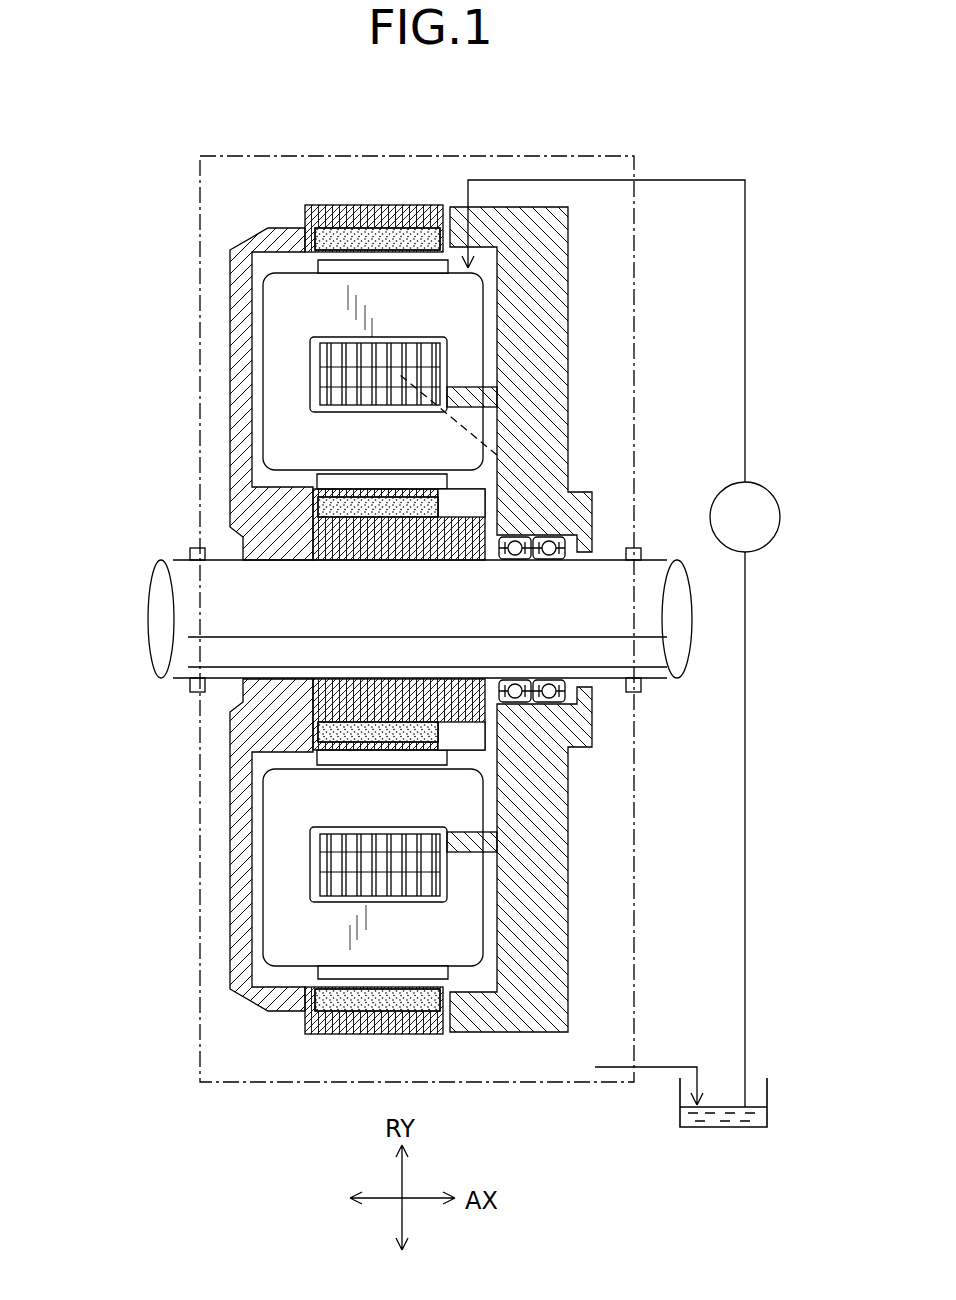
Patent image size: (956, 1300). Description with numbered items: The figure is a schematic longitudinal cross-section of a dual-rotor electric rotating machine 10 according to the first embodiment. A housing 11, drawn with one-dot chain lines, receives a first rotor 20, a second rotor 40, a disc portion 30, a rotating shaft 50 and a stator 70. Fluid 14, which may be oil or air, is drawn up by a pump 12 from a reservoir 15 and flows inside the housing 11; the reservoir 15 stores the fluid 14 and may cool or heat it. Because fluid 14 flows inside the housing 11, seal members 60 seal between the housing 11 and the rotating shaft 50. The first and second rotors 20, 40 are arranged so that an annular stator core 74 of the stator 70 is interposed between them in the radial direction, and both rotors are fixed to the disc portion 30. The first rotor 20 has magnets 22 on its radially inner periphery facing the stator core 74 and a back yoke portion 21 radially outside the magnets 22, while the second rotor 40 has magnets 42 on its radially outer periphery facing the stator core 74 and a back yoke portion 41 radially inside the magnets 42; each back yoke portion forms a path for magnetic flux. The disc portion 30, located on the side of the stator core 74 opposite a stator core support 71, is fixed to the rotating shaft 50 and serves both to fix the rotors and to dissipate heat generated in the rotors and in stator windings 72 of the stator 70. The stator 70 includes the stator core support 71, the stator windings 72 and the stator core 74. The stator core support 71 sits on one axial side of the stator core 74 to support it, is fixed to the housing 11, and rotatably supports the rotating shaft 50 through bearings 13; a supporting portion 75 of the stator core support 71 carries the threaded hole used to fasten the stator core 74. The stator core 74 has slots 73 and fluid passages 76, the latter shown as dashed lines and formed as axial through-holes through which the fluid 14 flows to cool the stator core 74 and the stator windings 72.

The electric rotating machine 10 is at (400, 581).
The housing 11 is at (268, 153).
The pump 12 is at (773, 500).
The bearings 13 is at (568, 748).
The fluid 14 is at (708, 1120).
The reservoir 15 is at (767, 1088).
The first rotor 20 is at (260, 619).
The back yoke portion 21 is at (305, 212).
The magnets 22 is at (313, 250).
The disc portion 30 is at (240, 378).
The second rotor 40 is at (276, 608).
The back yoke portion 41 is at (330, 537).
The magnets 42 is at (300, 491).
The rotating shaft 50 is at (190, 610).
The seal members 60 is at (190, 693).
The stator 70 is at (503, 619).
The stator core support 71 is at (537, 250).
The stator windings 72 is at (462, 305).
The slots 73 is at (420, 340).
The stator core 74 is at (433, 355).
The supporting portion 75 is at (420, 383).
The fluid passages 76 is at (543, 441).